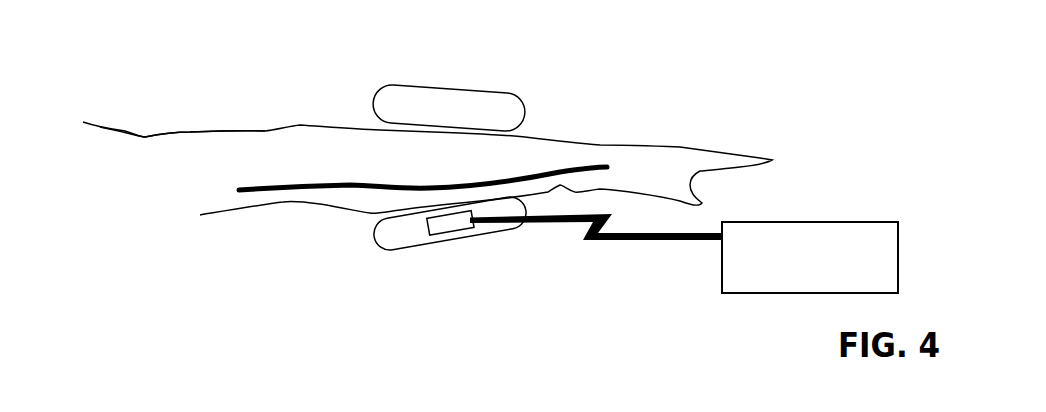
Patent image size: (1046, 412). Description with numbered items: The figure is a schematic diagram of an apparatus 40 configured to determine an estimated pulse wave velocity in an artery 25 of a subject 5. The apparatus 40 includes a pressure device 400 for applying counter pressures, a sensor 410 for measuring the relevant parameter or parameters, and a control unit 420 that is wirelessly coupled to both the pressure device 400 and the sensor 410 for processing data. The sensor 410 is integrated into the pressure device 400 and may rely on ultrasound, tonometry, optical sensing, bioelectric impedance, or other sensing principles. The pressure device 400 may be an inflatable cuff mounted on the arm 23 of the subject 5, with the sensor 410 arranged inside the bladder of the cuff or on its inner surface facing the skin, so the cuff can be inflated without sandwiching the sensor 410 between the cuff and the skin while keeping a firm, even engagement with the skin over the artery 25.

The subject 5 is at (113, 143).
The arm 23 is at (193, 143).
The artery 25 is at (292, 192).
The apparatus 40 is at (567, 106).
The pressure device 400 is at (433, 98).
The sensor 410 is at (453, 228).
The control unit 420 is at (790, 282).